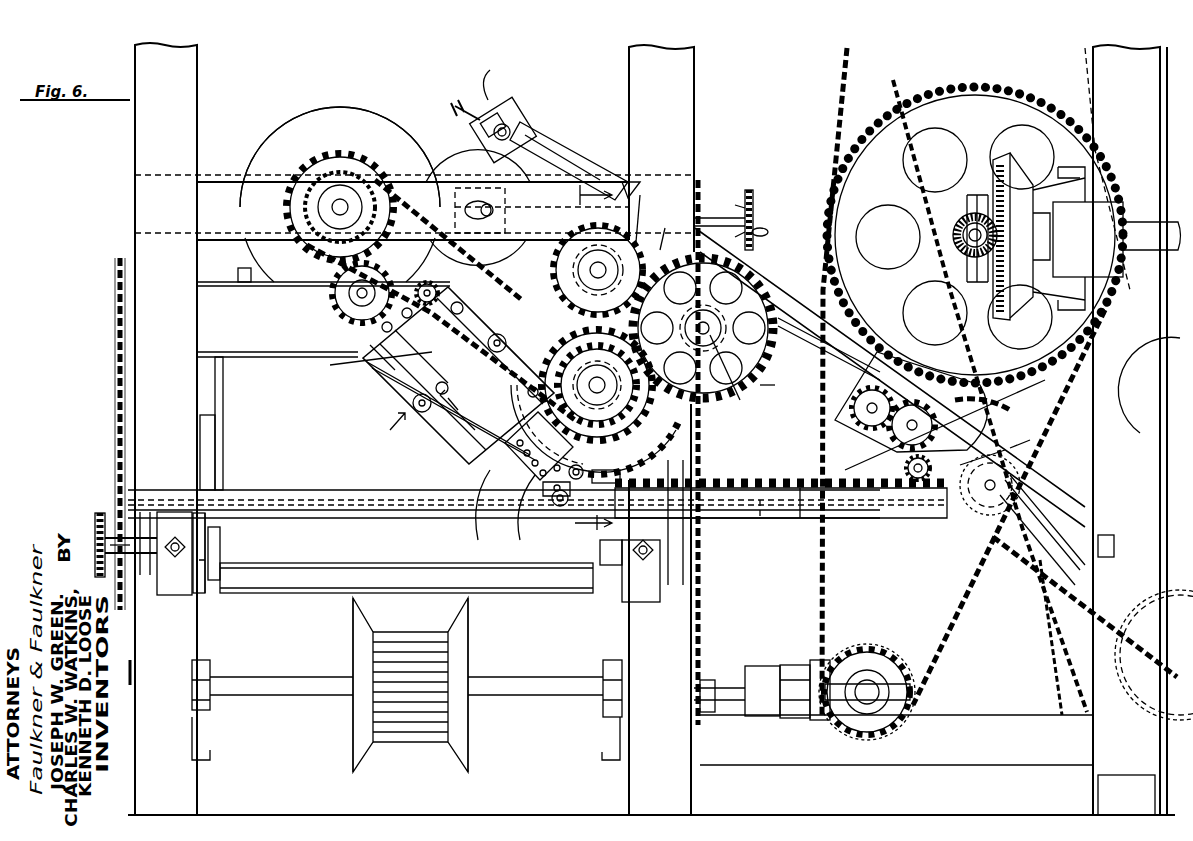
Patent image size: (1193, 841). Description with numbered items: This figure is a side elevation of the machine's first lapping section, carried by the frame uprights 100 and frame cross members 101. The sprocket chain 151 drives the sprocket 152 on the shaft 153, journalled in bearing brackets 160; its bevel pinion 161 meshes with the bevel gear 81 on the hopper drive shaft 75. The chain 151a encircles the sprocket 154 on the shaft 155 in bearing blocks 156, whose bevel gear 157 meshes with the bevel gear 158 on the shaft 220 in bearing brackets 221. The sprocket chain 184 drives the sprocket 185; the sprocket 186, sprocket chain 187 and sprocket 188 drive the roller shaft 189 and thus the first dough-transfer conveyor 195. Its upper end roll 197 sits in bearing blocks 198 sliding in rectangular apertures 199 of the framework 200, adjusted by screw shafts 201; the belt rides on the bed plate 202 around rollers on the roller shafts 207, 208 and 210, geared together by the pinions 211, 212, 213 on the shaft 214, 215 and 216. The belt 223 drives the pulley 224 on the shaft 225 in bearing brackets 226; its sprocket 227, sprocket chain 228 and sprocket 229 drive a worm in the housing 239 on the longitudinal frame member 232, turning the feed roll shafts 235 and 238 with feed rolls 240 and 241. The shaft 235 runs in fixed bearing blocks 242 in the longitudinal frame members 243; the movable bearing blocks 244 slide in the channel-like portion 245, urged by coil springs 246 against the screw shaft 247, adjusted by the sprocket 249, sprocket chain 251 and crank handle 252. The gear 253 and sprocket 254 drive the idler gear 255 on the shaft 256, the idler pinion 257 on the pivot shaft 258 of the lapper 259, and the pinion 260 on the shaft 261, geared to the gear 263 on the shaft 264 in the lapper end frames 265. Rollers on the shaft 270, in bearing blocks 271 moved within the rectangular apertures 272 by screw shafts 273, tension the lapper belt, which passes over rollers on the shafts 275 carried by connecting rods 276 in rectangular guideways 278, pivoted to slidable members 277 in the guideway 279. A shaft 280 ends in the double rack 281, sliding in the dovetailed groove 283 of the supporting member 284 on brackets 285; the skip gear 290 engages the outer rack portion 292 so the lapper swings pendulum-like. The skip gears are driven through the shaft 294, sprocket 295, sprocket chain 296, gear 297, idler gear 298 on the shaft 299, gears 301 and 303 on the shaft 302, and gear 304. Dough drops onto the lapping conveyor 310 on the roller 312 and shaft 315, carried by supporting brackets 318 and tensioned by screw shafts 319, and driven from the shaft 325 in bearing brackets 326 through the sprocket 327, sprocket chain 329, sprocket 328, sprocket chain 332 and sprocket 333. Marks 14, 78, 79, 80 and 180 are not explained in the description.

The section line 14 is at (583, 358).
The hopper drive shaft 75 is at (1148, 225).
The gear box 78 is at (1085, 245).
The bracket 79 is at (1070, 160).
The chain 80 is at (1135, 140).
The bevel gear 81 is at (1018, 162).
The frame uprights 100 is at (200, 75).
The frame cross members 101 is at (205, 755).
The sprocket chain 151 is at (835, 60).
The sprocket chain 151a is at (948, 70).
The sprocket 152 is at (1000, 88).
The shaft 153 is at (970, 233).
The sprocket 154 is at (900, 660).
The shaft 155 is at (862, 700).
The bearing blocks 156 is at (880, 705).
The bevel gear 157 is at (890, 640).
The bevel gear 158 is at (795, 648).
The bearing brackets 160 is at (968, 200).
The bevel pinion 161 is at (965, 250).
The wheel 180 is at (1148, 410).
The sprocket chain 184 is at (945, 298).
The sprocket 185 is at (1060, 620).
The sprocket 186 is at (1138, 630).
The sprocket chain 187 is at (1025, 560).
The sprocket 188 is at (1020, 488).
The roller shaft 189 is at (1025, 505).
The first dough-transfer conveyor 195 is at (1095, 545).
The upper end roll 197 is at (508, 128).
The bearing blocks 198 is at (495, 118).
The rectangular apertures 199 is at (570, 128).
The dough-transfer conveyor framework 200 is at (476, 80).
The screw shafts 201 is at (455, 100).
The bed plate 202 is at (810, 350).
The roller shaft 207 is at (870, 412).
The roller shaft 208 is at (835, 415).
The roller shaft 210 is at (998, 439).
The pinion 211 is at (838, 390).
The pinion 212 is at (935, 385).
The pinion 213 is at (900, 440).
The shaft 214 is at (915, 480).
The pinion 215 is at (992, 405).
The pinion 216 is at (980, 505).
The shaft 220 is at (740, 666).
The bearing brackets 221 is at (770, 665).
The belt 223 is at (415, 622).
The pulley 224 is at (353, 632).
The shaft 225 is at (320, 668).
The bearing brackets 226 is at (210, 668).
The sprocket 227 is at (128, 675).
The sprocket chain 228 is at (118, 465).
The sprocket 229 is at (128, 300).
The longitudinal frame member 232 is at (205, 337).
The feed roll shaft 235 is at (335, 205).
The feed roll shaft 238 is at (485, 205).
The housing 239 is at (345, 115).
The feed roll 240 is at (312, 140).
The feed roll 241 is at (448, 158).
The fixed bearing blocks 242 is at (300, 208).
The longitudinal frame members 243 is at (245, 182).
The movable bearing blocks 244 is at (470, 195).
The channel-like portion 245 is at (595, 182).
The coil springs 246 is at (415, 172).
The screw shaft 247 is at (710, 212).
The sprocket 249 is at (770, 208).
The sprocket chain 251 is at (750, 192).
The crank handle 252 is at (785, 228).
The gear 253 is at (308, 170).
The sprocket 254 is at (344, 180).
The idler gear 255 is at (335, 295).
The shaft 256 is at (355, 298).
The idler pinion 257 is at (400, 320).
The pivot shaft 258 is at (395, 375).
The lapper 259 is at (380, 426).
The pinion 260 is at (423, 283).
The shaft 261 is at (458, 300).
The gear 263 is at (365, 325).
The shaft 264 is at (380, 333).
The end frames 265 is at (387, 335).
The shaft 270 is at (440, 400).
The bearing blocks 271 is at (445, 405).
The rectangular apertures 272 is at (448, 395).
The screw shafts 273 is at (350, 407).
The shafts 275 is at (500, 335).
The connecting rods 276 is at (515, 340).
The slidable members 277 is at (470, 520).
The rectangular guideways 278 is at (363, 364).
The guideway 279 is at (470, 429).
The shaft 280 is at (555, 505).
The double rack 281 is at (786, 492).
The dovetailed groove 283 is at (280, 492).
The supporting member 284 is at (328, 495).
The brackets 285 is at (150, 490).
The skip gear 290 is at (712, 467).
The outer rack portion 292 is at (773, 500).
The shaft 294 is at (645, 438).
The sprocket 295 is at (598, 390).
The sprocket chain 296 is at (305, 245).
The gear 297 is at (665, 452).
The idler gear 298 is at (780, 385).
The shaft 299 is at (739, 377).
The gear 301 is at (664, 232).
The shaft 302 is at (595, 268).
The gear 303 is at (652, 212).
The gear 304 is at (712, 422).
The lapping conveyor 310 is at (406, 563).
The roller 312 is at (225, 548).
The shaft 315 is at (222, 580).
The supporting brackets 318 is at (205, 585).
The screw shafts 319 is at (175, 560).
The shaft 325 is at (693, 688).
The bearing brackets 326 is at (610, 665).
The sprocket 327 is at (708, 705).
The sprocket 328 is at (690, 555).
The sprocket chain 329 is at (705, 600).
The sprocket chain 332 is at (100, 512).
The sprocket 333 is at (95, 530).